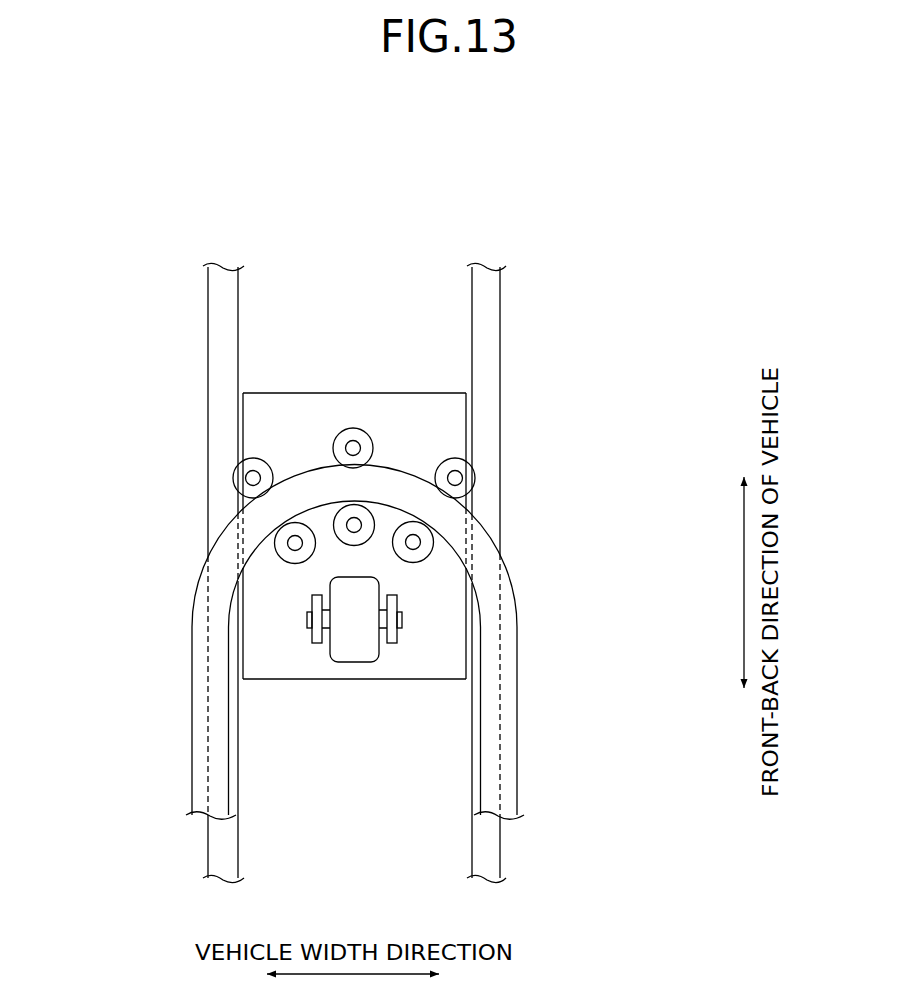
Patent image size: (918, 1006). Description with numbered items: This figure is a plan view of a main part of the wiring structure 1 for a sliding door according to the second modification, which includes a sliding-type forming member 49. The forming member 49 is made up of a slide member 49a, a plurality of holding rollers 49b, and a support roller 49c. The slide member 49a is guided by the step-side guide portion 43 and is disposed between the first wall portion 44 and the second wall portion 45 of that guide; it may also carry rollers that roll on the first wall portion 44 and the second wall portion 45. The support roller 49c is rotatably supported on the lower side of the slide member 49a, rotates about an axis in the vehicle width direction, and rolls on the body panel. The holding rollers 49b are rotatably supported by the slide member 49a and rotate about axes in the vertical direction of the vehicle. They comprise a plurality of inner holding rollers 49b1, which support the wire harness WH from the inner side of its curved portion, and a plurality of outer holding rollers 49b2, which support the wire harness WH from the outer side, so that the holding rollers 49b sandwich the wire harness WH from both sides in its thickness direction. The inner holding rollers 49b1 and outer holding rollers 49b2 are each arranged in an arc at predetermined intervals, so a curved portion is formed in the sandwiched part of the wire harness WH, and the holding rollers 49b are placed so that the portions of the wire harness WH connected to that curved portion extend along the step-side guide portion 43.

The wiring structure 1 is at (177, 131).
The step-side guide portion 43 is at (238, 170).
The first wall portion 44 is at (226, 258).
The second wall portion 45 is at (484, 258).
The forming member 49 is at (612, 612).
The slide member 49a is at (390, 391).
The holding rollers 49b is at (383, 438).
The inner holding rollers 49b1 is at (388, 557).
The outer holding rollers 49b2 is at (431, 464).
The support roller 49c is at (387, 582).
The wire harness WH is at (522, 682).